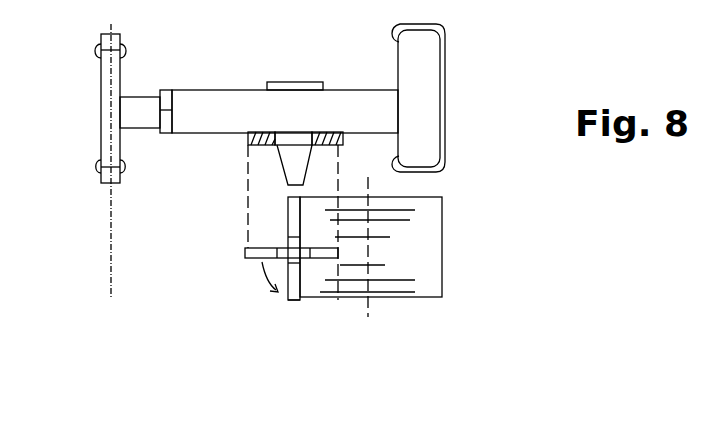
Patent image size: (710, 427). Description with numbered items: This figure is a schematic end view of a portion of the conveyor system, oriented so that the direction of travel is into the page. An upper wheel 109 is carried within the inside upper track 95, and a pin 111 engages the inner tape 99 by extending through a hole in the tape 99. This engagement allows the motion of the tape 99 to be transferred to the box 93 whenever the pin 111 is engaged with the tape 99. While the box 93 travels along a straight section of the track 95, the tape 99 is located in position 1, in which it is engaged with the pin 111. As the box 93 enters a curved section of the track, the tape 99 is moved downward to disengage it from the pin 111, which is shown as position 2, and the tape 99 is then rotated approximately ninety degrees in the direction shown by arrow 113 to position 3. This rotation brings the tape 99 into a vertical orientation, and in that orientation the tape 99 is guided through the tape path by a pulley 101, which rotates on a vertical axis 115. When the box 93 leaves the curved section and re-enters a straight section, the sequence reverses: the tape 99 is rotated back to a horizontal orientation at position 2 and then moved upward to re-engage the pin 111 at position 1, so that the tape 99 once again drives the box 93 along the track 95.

The box 93 is at (113, 238).
The upper track 95 is at (447, 55).
The inner tape 99 is at (247, 142).
The pulley 101 is at (390, 287).
The upper wheel 109 is at (415, 78).
The pin 111 is at (279, 167).
The arrow 113 is at (268, 284).
The vertical axis 115 is at (367, 312).
The position 1 is at (336, 140).
The position 2 is at (246, 254).
The position 3 is at (288, 302).